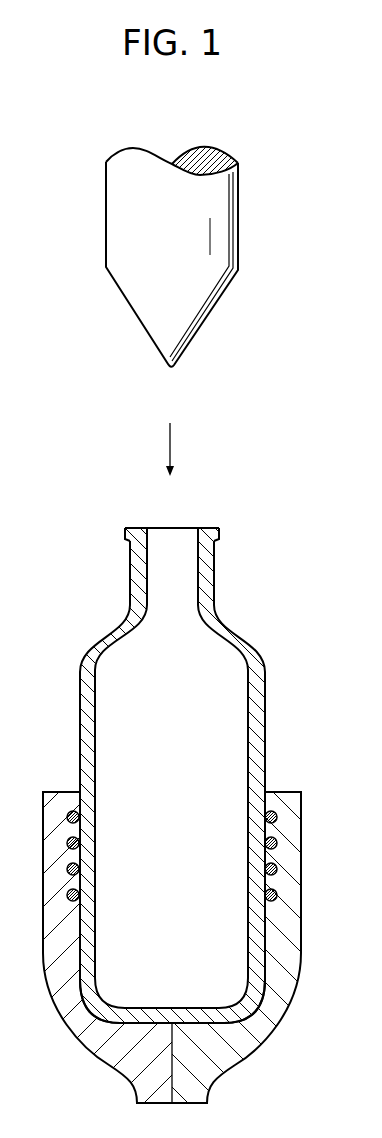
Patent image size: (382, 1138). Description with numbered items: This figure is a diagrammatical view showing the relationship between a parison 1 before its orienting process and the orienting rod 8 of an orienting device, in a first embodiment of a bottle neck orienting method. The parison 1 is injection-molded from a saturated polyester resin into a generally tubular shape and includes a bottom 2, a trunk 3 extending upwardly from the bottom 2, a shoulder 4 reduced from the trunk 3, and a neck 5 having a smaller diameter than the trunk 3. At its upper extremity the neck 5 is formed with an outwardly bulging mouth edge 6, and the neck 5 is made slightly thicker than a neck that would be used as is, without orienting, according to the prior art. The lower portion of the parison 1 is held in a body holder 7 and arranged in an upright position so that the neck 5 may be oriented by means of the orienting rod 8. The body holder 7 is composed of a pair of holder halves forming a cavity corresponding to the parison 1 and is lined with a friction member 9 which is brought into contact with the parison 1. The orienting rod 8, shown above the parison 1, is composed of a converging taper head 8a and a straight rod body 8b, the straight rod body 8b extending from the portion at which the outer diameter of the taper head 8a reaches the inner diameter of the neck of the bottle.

The parison 1 is at (193, 814).
The bottom 2 is at (217, 1021).
The trunk 3 is at (260, 687).
The shoulder 4 is at (252, 633).
The neck 5 is at (213, 580).
The mouth edge 6 is at (218, 537).
The body holder 7 is at (290, 865).
The orienting rod 8 is at (194, 257).
The taper head 8a is at (203, 321).
The straight rod body 8b is at (218, 191).
The friction member 9 is at (272, 815).